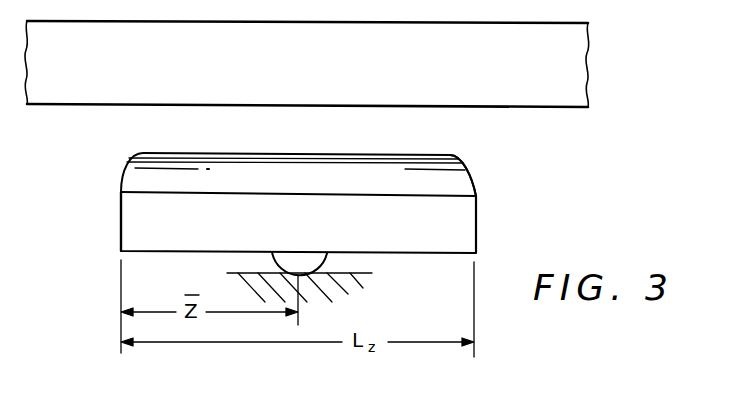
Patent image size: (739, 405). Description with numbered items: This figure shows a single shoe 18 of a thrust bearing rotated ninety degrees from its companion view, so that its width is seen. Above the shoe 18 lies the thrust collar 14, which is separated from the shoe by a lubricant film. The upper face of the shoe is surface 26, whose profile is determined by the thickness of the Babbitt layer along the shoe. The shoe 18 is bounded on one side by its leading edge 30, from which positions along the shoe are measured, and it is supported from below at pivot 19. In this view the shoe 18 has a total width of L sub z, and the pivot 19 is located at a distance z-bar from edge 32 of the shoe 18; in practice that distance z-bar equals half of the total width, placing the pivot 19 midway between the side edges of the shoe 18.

The thrust collar 14 is at (562, 70).
The shoe 18 is at (453, 228).
The pivot 19 is at (292, 270).
The surface 26 is at (253, 173).
The leading edge 30 is at (425, 222).
The edge 32 is at (121, 212).